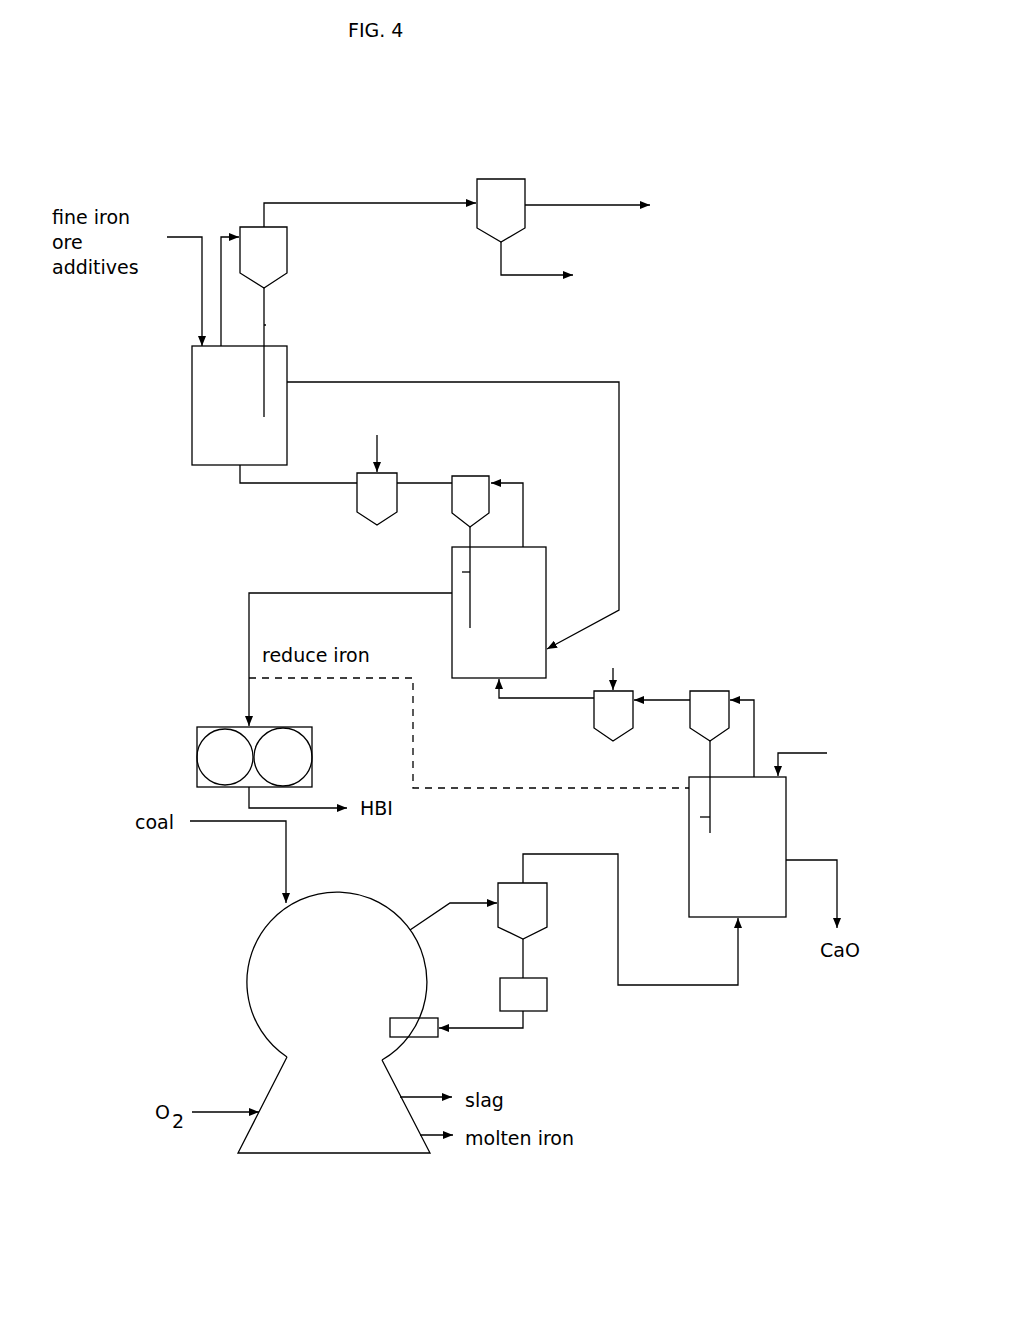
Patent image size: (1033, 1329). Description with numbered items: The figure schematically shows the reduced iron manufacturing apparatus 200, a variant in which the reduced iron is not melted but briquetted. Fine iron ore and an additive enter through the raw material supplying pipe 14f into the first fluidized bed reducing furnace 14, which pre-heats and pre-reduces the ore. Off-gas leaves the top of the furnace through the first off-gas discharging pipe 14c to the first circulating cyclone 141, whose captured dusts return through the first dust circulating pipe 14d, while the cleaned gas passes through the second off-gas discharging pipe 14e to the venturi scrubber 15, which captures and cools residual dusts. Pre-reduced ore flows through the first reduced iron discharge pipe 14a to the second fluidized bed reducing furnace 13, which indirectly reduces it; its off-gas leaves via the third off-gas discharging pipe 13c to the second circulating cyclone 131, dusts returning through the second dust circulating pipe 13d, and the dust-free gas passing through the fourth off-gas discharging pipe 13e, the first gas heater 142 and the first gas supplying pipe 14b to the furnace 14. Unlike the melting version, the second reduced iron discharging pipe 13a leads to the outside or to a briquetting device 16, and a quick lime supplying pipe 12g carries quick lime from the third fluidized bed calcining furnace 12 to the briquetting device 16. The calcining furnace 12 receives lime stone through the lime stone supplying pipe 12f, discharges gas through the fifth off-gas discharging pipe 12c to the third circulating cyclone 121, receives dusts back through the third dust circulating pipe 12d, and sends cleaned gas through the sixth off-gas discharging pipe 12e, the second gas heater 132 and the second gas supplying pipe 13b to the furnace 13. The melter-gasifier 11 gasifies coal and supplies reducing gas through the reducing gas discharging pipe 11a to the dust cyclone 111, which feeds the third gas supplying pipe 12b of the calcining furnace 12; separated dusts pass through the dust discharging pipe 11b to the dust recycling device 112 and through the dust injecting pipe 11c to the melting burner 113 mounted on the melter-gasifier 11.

The reduced iron manufacturing apparatus 200 is at (473, 152).
The venturi scrubber 15 is at (517, 175).
The first circulating cyclone 141 is at (288, 252).
The raw material supplying pipe 14f is at (178, 230).
The first off-gas discharging pipe 14c is at (223, 228).
The second off-gas discharging pipe 14e is at (375, 200).
The first dust circulating pipe 14d is at (266, 325).
The first fluidized bed reducing furnace 14 is at (239, 405).
The first reduced iron discharge pipe 14a is at (345, 380).
The first gas supplying pipe 14b is at (303, 487).
The first gas heater 142 is at (355, 498).
The fourth off-gas discharging pipe 13e is at (423, 478).
The second circulating cyclone 131 is at (477, 472).
The third off-gas discharging pipe 13c is at (523, 507).
The second dust circulating pipe 13d is at (462, 572).
The second fluidized bed reducing furnace 13 is at (499, 612).
The second reduced iron discharging pipe 13a is at (290, 593).
The briquetting device 16 is at (312, 747).
The quick lime supplying pipe 12g is at (495, 792).
The second gas supplying pipe 13b is at (550, 712).
The second gas heater 132 is at (600, 733).
The third circulating cyclone 121 is at (695, 731).
The sixth off-gas discharging pipe 12e is at (667, 698).
The fifth off-gas discharging pipe 12c is at (754, 720).
The lime stone supplying pipe 12f is at (802, 757).
The third dust circulating pipe 12d is at (700, 817).
The third fluidized bed calcining furnace 12 is at (737, 847).
The third gas supplying pipe 12b is at (690, 990).
The melter-gasifier 11 is at (334, 1022).
The reducing gas discharging pipe 11a is at (437, 915).
The dust cyclone 111 is at (547, 908).
The dust discharging pipe 11b is at (523, 953).
The dust recycling device 112 is at (547, 998).
The melting burner 113 is at (417, 1037).
The dust injecting pipe 11c is at (495, 1035).